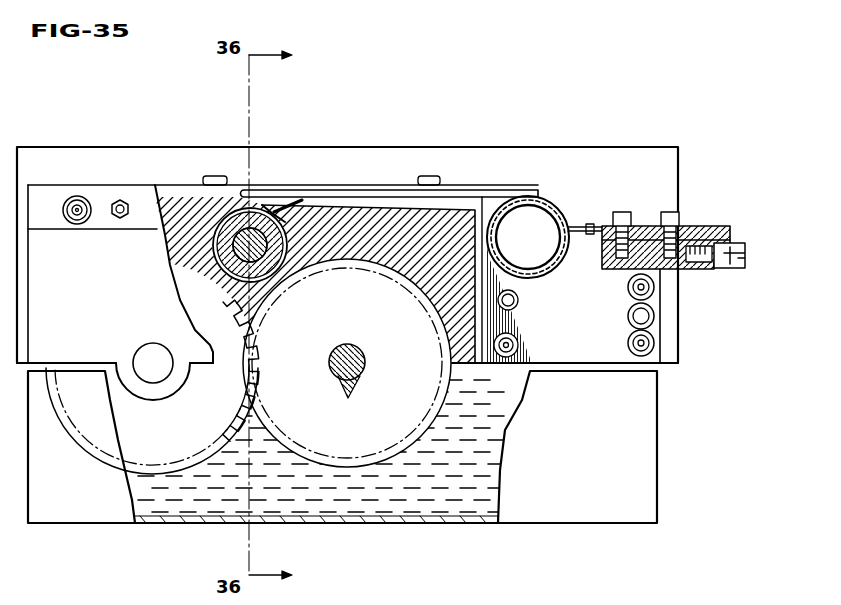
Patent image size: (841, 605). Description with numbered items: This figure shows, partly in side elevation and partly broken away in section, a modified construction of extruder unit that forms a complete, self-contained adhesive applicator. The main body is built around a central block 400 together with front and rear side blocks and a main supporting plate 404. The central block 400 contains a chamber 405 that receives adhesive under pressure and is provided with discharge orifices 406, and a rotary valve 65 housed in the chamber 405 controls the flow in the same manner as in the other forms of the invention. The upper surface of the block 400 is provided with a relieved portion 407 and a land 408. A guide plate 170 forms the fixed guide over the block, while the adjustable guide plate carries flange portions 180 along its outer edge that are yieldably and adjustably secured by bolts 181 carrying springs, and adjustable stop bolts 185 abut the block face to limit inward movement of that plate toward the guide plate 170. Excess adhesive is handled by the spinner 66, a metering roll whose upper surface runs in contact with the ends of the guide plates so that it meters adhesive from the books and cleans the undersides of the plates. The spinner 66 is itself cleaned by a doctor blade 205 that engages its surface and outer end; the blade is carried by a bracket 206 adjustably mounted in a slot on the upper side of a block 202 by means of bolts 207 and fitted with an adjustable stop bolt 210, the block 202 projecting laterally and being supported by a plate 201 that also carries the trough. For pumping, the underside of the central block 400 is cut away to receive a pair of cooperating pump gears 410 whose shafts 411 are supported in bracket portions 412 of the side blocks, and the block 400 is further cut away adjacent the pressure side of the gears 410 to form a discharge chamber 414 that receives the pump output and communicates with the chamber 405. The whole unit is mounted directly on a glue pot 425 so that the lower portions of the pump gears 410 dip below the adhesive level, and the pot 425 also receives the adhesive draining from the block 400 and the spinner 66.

The rotary valve 65 is at (276, 222).
The spinner 66 is at (563, 213).
The guide plate 170 is at (466, 185).
The flange portions 180 is at (52, 217).
The bolts 181 is at (78, 224).
The adjustable stop bolts 185 is at (120, 218).
The plate 201 is at (622, 352).
The block 202 is at (683, 272).
The doctor blade 205 is at (571, 239).
The bracket 206 is at (716, 228).
The bolts 207 is at (671, 212).
The adjustable stop bolt 210 is at (744, 262).
The central block 400 is at (203, 205).
The main supporting plate 404 is at (115, 160).
The chamber 405 is at (318, 199).
The discharge orifices 406 is at (250, 208).
The relieved portion 407 is at (446, 205).
The land 408 is at (265, 212).
The pump gears 410 is at (125, 427).
The shafts 411 is at (143, 355).
The bracket portions 412 is at (157, 395).
The discharge chamber 414 is at (267, 288).
The glue pot 425 is at (642, 458).